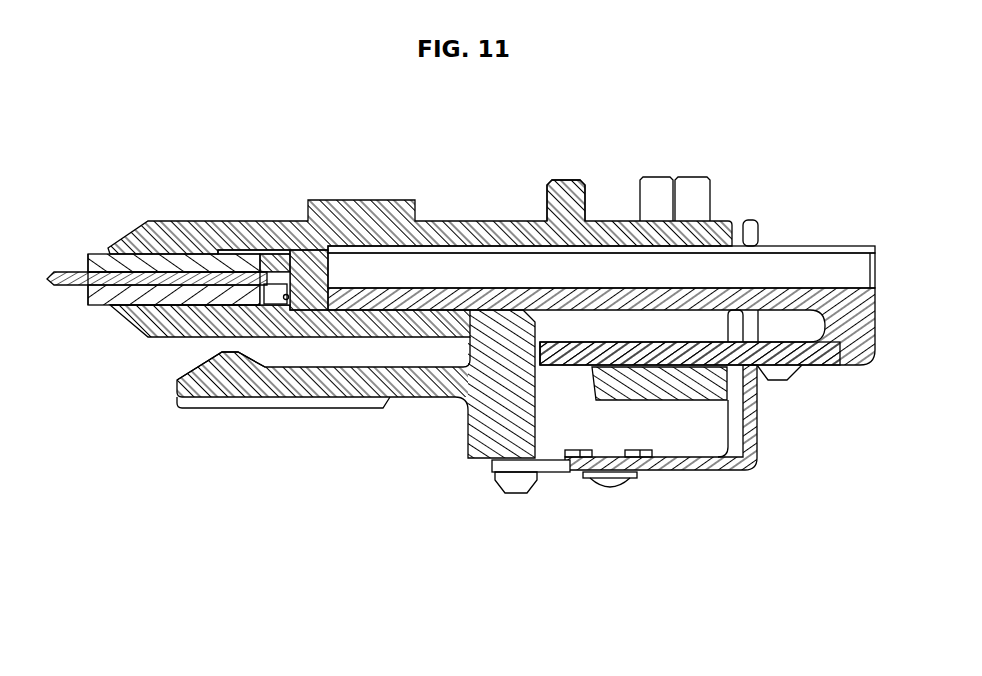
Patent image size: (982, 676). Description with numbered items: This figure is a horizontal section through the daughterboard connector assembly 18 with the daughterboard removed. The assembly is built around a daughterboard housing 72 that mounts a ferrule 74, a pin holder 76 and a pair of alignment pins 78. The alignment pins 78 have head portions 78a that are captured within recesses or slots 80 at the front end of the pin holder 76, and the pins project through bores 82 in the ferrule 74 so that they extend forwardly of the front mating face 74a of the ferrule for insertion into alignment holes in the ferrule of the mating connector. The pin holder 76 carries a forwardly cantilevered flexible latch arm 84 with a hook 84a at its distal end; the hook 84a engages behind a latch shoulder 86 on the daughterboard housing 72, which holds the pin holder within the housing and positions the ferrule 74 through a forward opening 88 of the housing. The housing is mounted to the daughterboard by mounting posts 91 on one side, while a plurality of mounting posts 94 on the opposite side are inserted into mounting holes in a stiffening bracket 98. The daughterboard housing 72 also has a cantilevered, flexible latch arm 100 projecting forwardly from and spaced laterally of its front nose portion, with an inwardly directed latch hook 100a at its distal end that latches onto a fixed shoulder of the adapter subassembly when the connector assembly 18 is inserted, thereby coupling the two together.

The daughterboard connector assembly 18 is at (490, 162).
The daughterboard housing 72 is at (488, 400).
The ferrule 74 is at (187, 298).
The front mating face 74a is at (84, 308).
The pin holder 76 is at (596, 298).
The alignment pins 78 is at (184, 264).
The head portions 78a is at (283, 258).
The recesses or slots 80 is at (338, 262).
The bores 82 is at (76, 274).
The flexible latch arm 84 is at (700, 350).
The hook 84a is at (573, 375).
The latch shoulder 86 is at (673, 452).
The forward opening 88 is at (148, 305).
The mounting posts 91 is at (567, 186).
The mounting posts 94 is at (540, 481).
The stiffening bracket 98 is at (703, 463).
The flexible latch arm 100 is at (337, 390).
The latch hook 100a is at (218, 378).